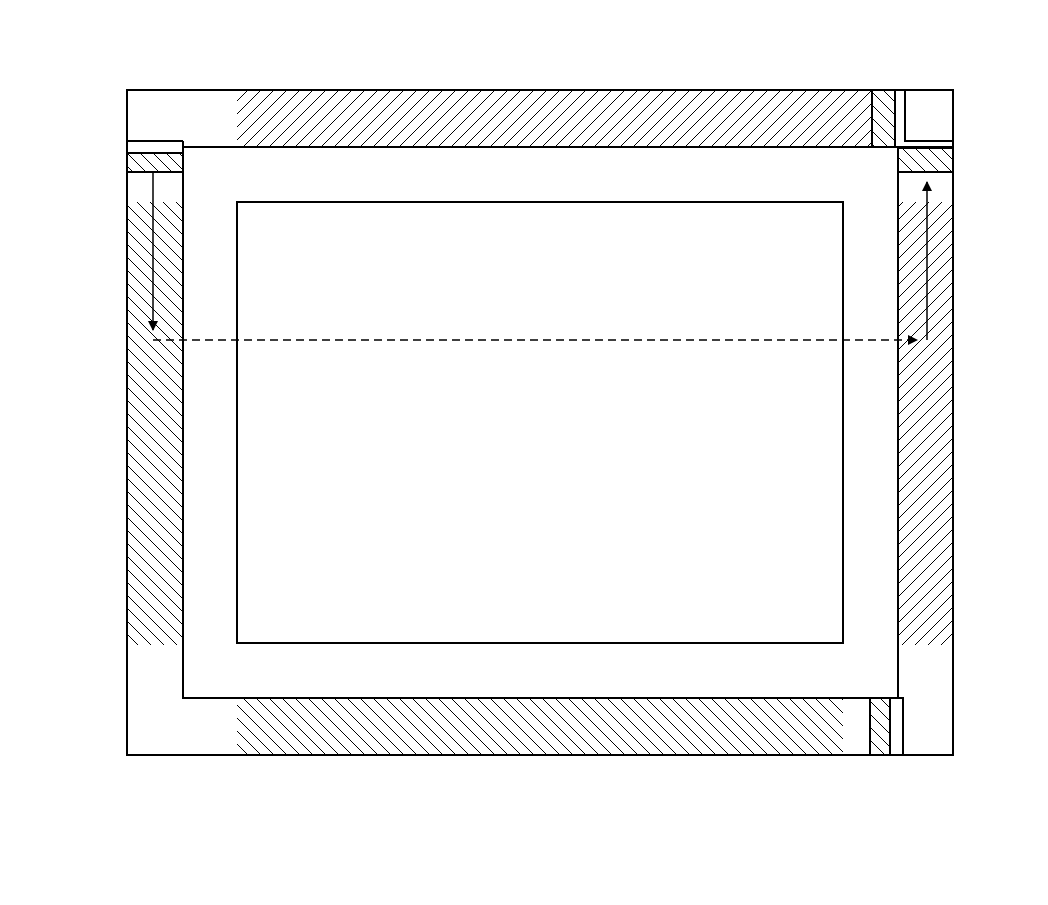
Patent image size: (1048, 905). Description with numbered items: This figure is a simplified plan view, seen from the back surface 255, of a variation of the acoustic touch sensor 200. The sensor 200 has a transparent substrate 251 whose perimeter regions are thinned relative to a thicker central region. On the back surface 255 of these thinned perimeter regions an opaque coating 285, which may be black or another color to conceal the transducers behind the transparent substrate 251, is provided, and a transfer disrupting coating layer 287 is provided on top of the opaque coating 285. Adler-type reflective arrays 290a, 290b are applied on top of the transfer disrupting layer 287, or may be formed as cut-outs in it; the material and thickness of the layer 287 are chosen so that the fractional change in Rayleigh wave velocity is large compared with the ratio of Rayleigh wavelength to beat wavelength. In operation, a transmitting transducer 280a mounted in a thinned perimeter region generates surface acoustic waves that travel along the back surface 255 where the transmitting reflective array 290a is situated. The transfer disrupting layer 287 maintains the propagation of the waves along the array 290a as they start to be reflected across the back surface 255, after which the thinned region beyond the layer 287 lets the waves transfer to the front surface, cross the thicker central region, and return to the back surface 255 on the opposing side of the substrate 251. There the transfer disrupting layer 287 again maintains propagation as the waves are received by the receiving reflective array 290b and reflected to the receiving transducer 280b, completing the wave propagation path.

The acoustic touch sensor 200 is at (120, 56).
The substrate 251 is at (768, 588).
The back surface 255 is at (212, 750).
The transmitting transducer 280a is at (140, 165).
The receiving transducer 280b is at (884, 96).
The opaque coating 285 is at (215, 672).
The transfer disrupting coating layer 287 is at (153, 653).
The transmitting reflective array 290a is at (133, 437).
The receiving reflective array 290b is at (593, 108).